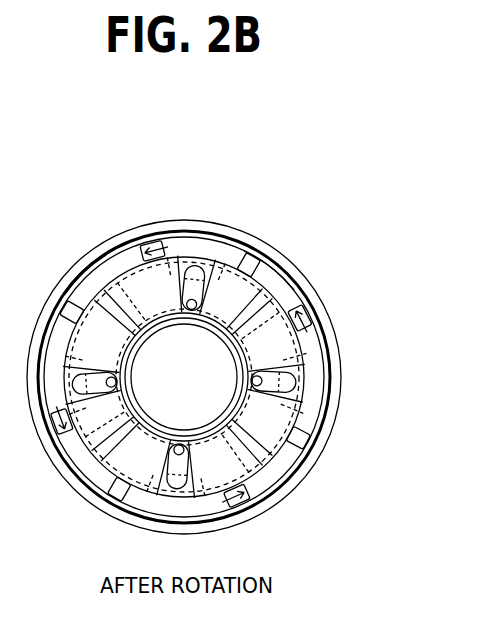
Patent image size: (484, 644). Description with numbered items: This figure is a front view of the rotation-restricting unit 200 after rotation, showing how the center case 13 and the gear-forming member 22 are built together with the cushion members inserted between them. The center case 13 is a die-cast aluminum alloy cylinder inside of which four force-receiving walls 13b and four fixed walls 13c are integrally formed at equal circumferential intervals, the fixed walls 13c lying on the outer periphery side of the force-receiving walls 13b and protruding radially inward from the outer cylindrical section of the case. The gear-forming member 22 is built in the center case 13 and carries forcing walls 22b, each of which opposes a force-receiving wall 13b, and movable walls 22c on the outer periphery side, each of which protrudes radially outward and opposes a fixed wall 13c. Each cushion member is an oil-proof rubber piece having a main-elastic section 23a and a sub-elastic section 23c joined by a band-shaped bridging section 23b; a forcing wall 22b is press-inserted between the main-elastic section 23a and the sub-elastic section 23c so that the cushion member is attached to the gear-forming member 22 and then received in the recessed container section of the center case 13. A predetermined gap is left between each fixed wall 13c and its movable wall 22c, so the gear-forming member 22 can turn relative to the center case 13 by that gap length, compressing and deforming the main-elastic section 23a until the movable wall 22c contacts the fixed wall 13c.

The center case 13 is at (184, 340).
The force-receiving wall 13b is at (287, 233).
The fixed wall 13c is at (65, 239).
The gear-forming member 22 is at (203, 366).
The forcing wall 22b is at (327, 373).
The movable wall 22c is at (154, 198).
The main-elastic section 23a is at (234, 377).
The bridging section 23b is at (341, 334).
The sub-elastic section 23c is at (319, 439).
The rotation-restricting unit 200 is at (58, 492).